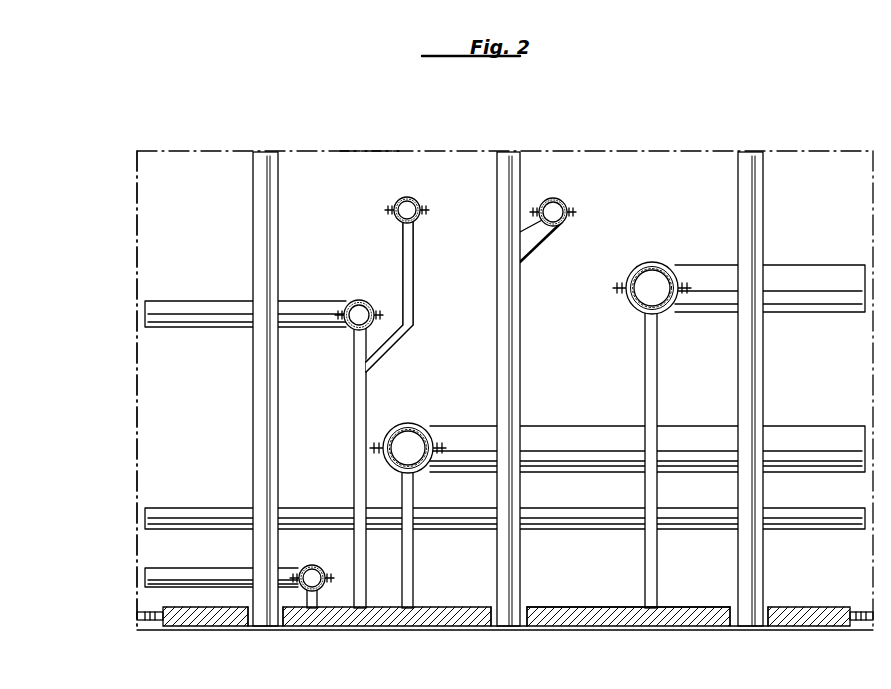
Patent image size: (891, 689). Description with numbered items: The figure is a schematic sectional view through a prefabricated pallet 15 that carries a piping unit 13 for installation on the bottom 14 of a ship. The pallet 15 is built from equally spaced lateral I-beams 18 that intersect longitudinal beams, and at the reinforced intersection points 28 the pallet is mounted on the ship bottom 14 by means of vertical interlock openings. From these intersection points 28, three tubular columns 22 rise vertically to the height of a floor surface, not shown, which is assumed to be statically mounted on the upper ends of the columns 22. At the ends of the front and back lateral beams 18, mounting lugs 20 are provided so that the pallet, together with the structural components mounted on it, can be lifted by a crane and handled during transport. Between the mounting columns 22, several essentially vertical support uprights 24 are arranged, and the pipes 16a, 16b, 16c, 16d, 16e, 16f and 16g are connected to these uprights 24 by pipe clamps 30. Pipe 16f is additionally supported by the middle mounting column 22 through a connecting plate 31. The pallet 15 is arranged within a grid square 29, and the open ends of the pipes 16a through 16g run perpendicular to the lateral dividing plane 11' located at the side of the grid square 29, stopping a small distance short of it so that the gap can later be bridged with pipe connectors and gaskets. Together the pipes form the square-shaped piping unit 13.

The lateral dividing plane 11' is at (505, 362).
The piping unit 13 is at (126, 272).
The grid square 29 is at (365, 146).
The tubular column 22 is at (262, 380).
The support upright 24 is at (414, 280).
The pipe clamp 30 is at (398, 221).
The connecting plate 31 is at (535, 240).
The pipe 16a is at (228, 577).
The pipe 16b is at (308, 300).
The pipe 16c is at (414, 204).
The pipe 16d is at (573, 514).
The pipe 16e is at (462, 432).
The pipe 16f is at (560, 204).
The pipe 16g is at (705, 276).
The pallet 15 is at (604, 603).
The lateral I-beam 18 is at (573, 617).
The bottom of the ship 14 is at (649, 633).
The mounting lug 20 is at (150, 622).
The intersection point 28 is at (258, 635).